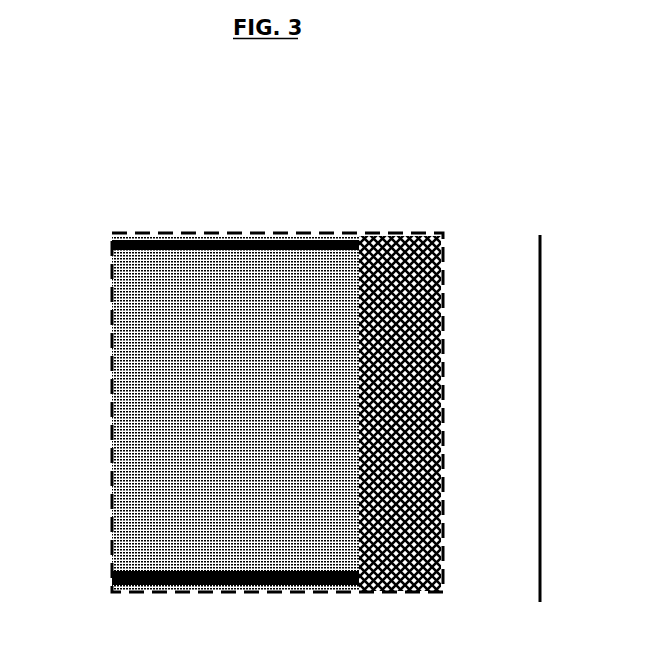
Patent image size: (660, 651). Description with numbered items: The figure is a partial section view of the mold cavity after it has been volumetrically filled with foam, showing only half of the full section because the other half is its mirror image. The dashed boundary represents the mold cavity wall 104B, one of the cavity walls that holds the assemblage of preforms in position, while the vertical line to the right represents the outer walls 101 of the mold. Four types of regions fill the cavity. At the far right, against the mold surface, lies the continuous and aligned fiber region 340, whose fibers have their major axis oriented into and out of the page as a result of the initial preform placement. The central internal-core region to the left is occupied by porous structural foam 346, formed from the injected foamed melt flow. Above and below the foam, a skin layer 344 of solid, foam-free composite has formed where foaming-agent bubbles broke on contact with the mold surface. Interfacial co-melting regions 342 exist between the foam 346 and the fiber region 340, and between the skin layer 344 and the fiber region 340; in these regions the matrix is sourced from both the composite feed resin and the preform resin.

The outer walls 101 is at (540, 425).
The mold cavity wall 104B is at (443, 286).
The continuous and aligned fiber region 340 is at (443, 351).
The interfacial co-melting region 342 is at (358, 450).
The skin layer 344 is at (211, 243).
The porous structural foam 346 is at (185, 478).